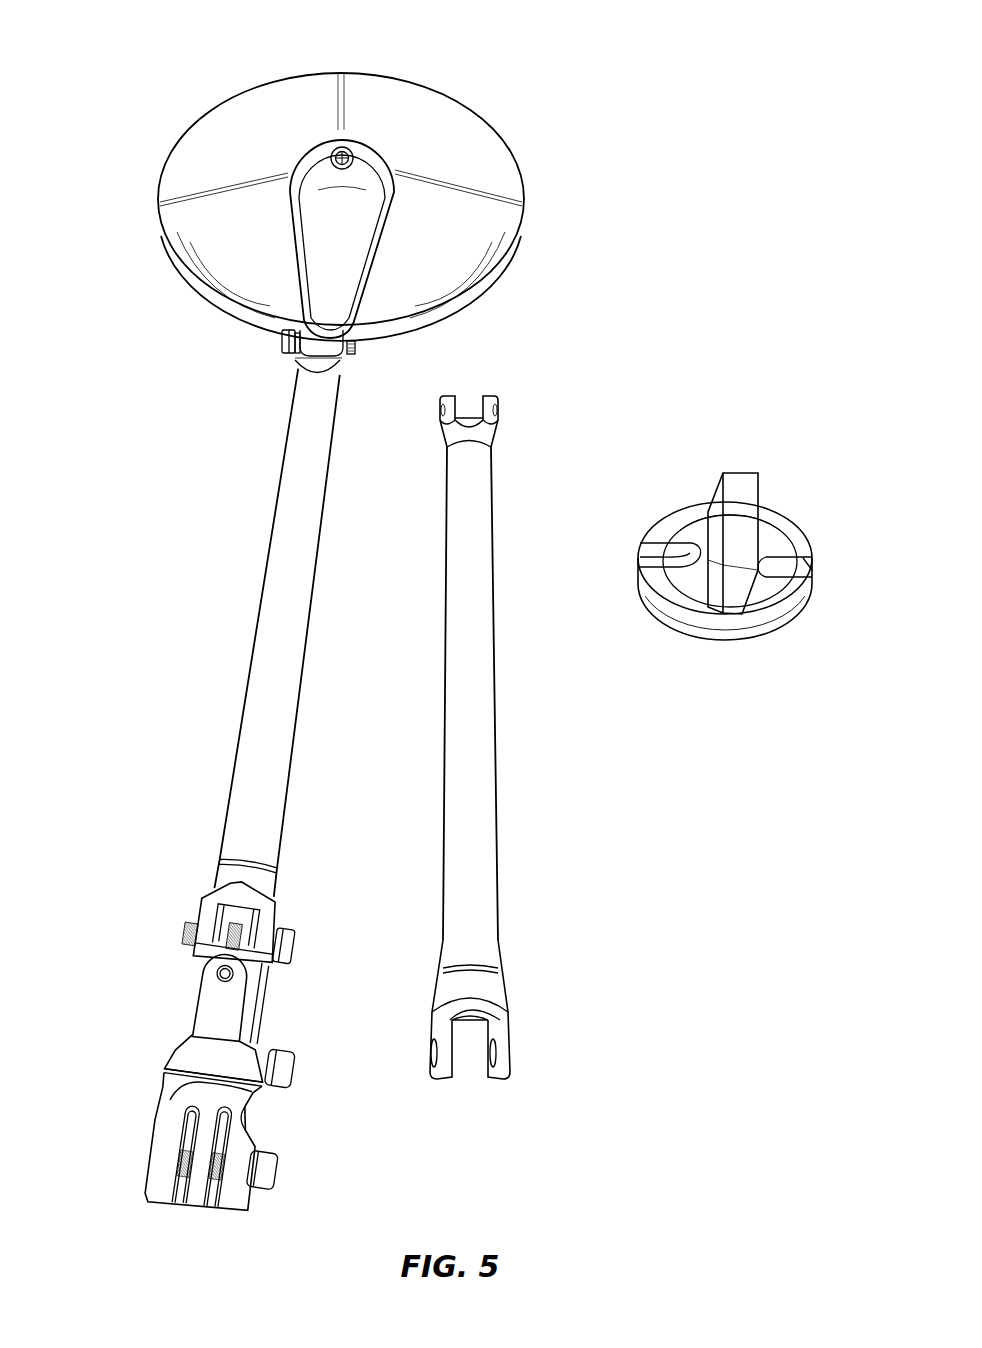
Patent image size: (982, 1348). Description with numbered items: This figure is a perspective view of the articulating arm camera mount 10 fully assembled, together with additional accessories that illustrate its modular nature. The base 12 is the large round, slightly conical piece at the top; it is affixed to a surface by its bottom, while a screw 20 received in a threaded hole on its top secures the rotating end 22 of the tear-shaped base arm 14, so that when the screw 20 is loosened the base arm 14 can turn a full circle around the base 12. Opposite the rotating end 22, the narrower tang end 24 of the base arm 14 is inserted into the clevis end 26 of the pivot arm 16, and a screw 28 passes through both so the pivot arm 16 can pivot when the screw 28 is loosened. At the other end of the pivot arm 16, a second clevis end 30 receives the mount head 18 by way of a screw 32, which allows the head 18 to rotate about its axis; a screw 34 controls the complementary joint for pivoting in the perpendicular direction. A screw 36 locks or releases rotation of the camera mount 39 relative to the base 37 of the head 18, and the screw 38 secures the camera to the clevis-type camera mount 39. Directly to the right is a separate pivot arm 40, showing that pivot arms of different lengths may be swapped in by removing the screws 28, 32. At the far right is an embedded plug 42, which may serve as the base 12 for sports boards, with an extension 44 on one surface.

The mount 10 is at (120, 80).
The base 12 is at (215, 218).
The base arm 14 is at (340, 228).
The pivot arm 16 is at (270, 659).
The mount head 18 is at (178, 1080).
The screw 20 is at (341, 148).
The rotating end 22 is at (375, 168).
The tang end 24 is at (362, 337).
The clevis end 26 is at (296, 366).
The screw 28 is at (282, 343).
The clevis end 30 is at (243, 873).
The screw 32 is at (289, 945).
The screw 34 is at (232, 977).
The screw 36 is at (285, 1068).
The base 37 is at (183, 1052).
The screw 38 is at (270, 1170).
The camera mount 39 is at (255, 1092).
The pivot arm 40 is at (480, 720).
The embedded plug 42 is at (762, 600).
The extension 44 is at (737, 497).